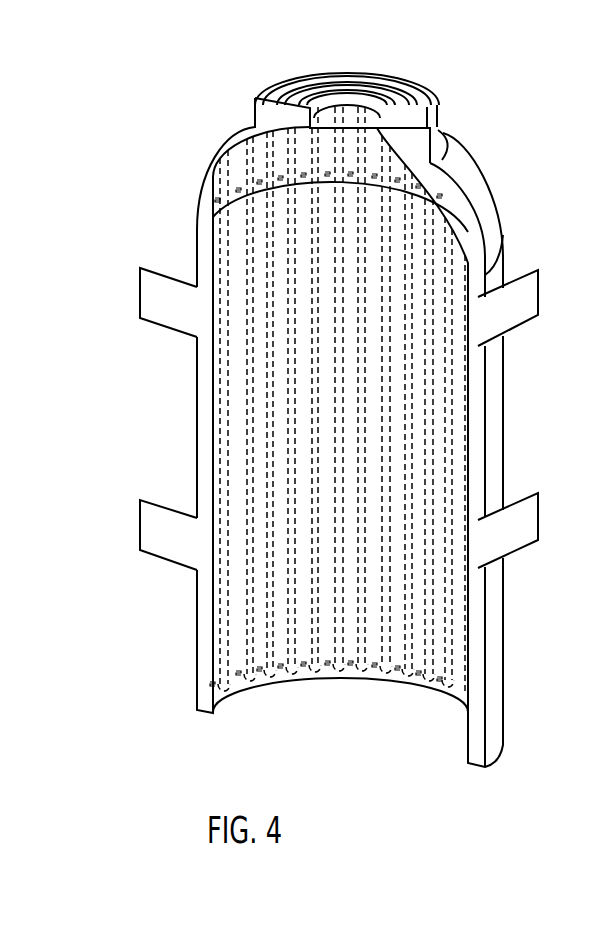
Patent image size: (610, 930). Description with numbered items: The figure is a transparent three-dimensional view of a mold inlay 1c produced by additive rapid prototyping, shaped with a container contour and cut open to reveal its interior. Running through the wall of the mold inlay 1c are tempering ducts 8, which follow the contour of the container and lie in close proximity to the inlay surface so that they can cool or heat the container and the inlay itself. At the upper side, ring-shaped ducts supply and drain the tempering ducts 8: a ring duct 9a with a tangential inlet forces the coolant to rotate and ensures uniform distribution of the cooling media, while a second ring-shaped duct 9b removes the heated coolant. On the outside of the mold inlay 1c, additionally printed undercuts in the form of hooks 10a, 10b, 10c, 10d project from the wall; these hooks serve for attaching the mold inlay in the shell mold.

The mold inlay 1c is at (181, 619).
The tempering ducts 8 is at (318, 640).
The ring duct 9a is at (293, 82).
The second ring-shaped duct 9b is at (396, 84).
The hook 10a is at (514, 302).
The hook 10b is at (514, 525).
The hook 10c is at (172, 533).
The hook 10d is at (172, 301).